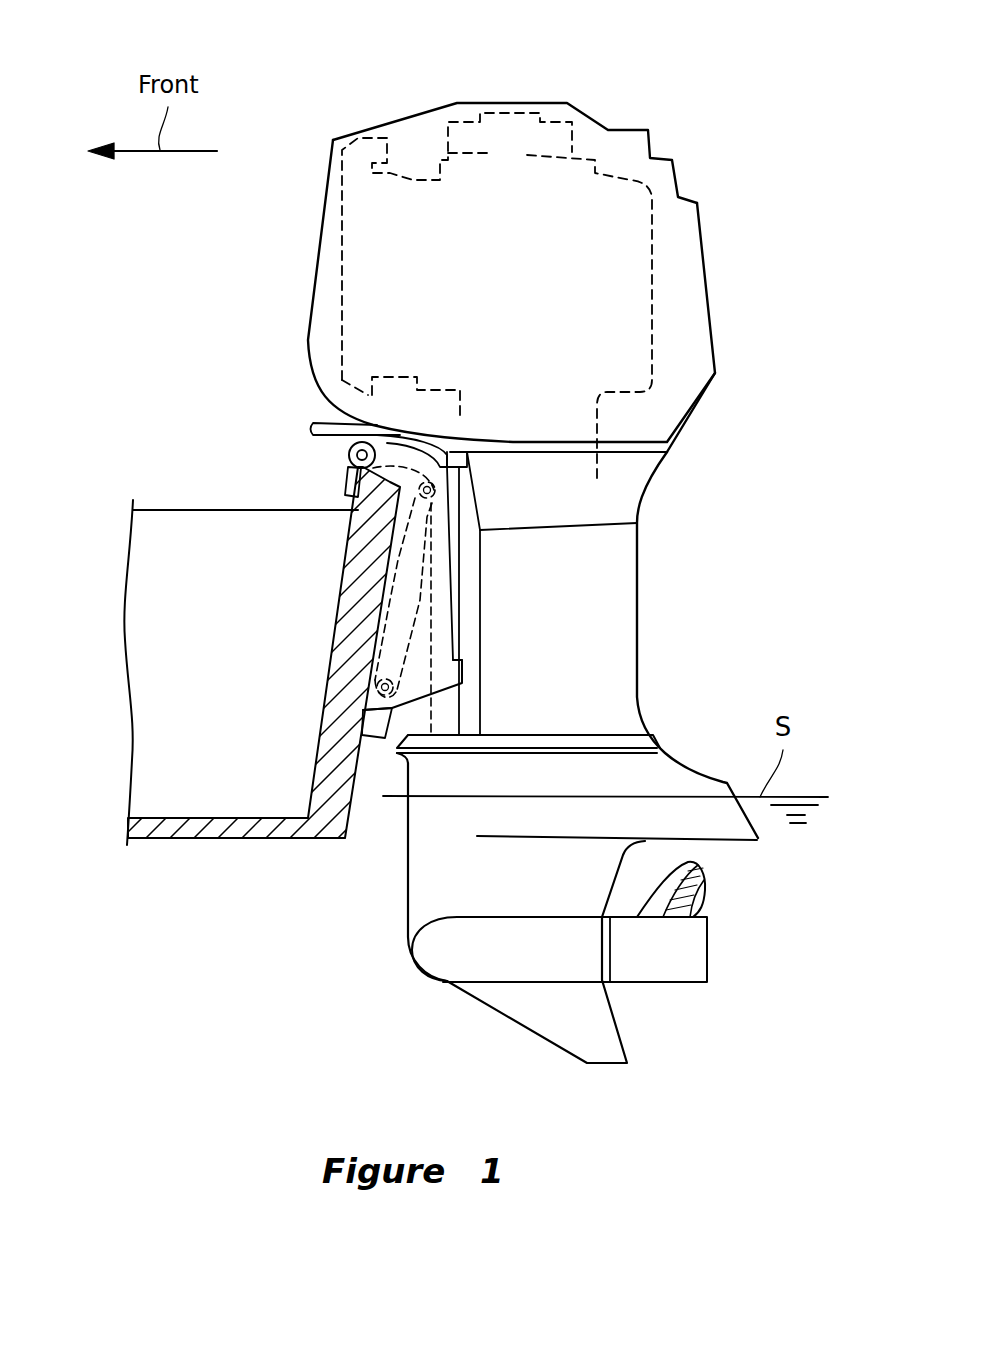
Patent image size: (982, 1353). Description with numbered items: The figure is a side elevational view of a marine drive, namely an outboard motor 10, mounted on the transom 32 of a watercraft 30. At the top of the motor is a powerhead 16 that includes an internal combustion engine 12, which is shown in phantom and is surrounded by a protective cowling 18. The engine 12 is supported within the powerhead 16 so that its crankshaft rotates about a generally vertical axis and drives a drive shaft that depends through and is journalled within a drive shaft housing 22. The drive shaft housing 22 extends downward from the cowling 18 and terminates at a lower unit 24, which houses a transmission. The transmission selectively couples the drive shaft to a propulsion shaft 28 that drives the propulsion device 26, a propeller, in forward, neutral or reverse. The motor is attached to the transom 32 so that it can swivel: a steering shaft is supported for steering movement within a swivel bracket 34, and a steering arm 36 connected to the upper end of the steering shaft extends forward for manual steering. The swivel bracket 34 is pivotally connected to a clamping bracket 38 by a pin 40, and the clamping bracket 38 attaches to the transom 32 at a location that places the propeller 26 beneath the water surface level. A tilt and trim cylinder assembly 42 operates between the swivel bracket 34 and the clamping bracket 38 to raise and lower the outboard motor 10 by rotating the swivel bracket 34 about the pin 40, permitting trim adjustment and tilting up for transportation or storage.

The outboard motor 10 is at (768, 110).
The engine 12 is at (662, 337).
The powerhead 16 is at (752, 271).
The protective cowling 18 is at (423, 135).
The drive shaft housing 22 is at (625, 567).
The lower unit 24 is at (425, 892).
The propulsion device 26 is at (703, 893).
The propulsion shaft 28 is at (653, 960).
The watercraft 30 is at (180, 510).
The transom 32 is at (320, 750).
The swivel bracket 34 is at (457, 562).
The steering arm 36 is at (322, 430).
The clamping bracket 38 is at (395, 568).
The pin 40 is at (348, 455).
The tilt and trim cylinder assembly 42 is at (378, 638).